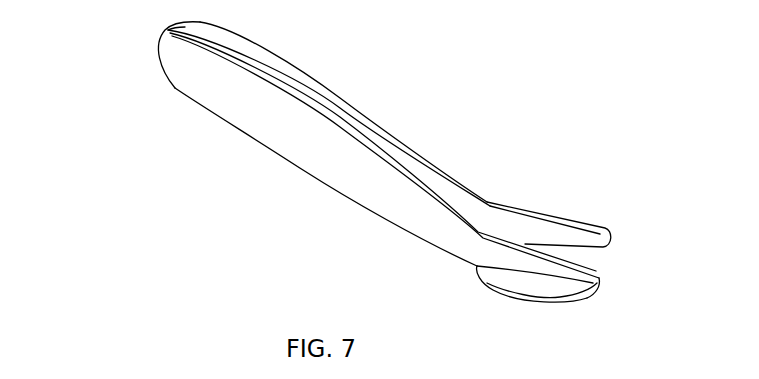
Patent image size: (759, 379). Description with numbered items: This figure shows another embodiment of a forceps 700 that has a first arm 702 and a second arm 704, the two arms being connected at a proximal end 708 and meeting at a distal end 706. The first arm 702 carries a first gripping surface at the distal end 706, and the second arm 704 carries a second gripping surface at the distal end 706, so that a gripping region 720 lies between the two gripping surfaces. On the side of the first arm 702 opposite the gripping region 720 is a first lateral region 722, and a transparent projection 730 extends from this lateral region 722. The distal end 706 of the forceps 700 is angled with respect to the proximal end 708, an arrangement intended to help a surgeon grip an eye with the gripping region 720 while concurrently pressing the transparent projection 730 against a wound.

The forceps 700 is at (222, 235).
The first arm 702 is at (390, 198).
The second arm 704 is at (430, 157).
The distal end 706 is at (625, 225).
The proximal end 708 is at (145, 58).
The gripping region 720 is at (590, 258).
The first lateral region 722 is at (527, 260).
The transparent projection 730 is at (540, 288).